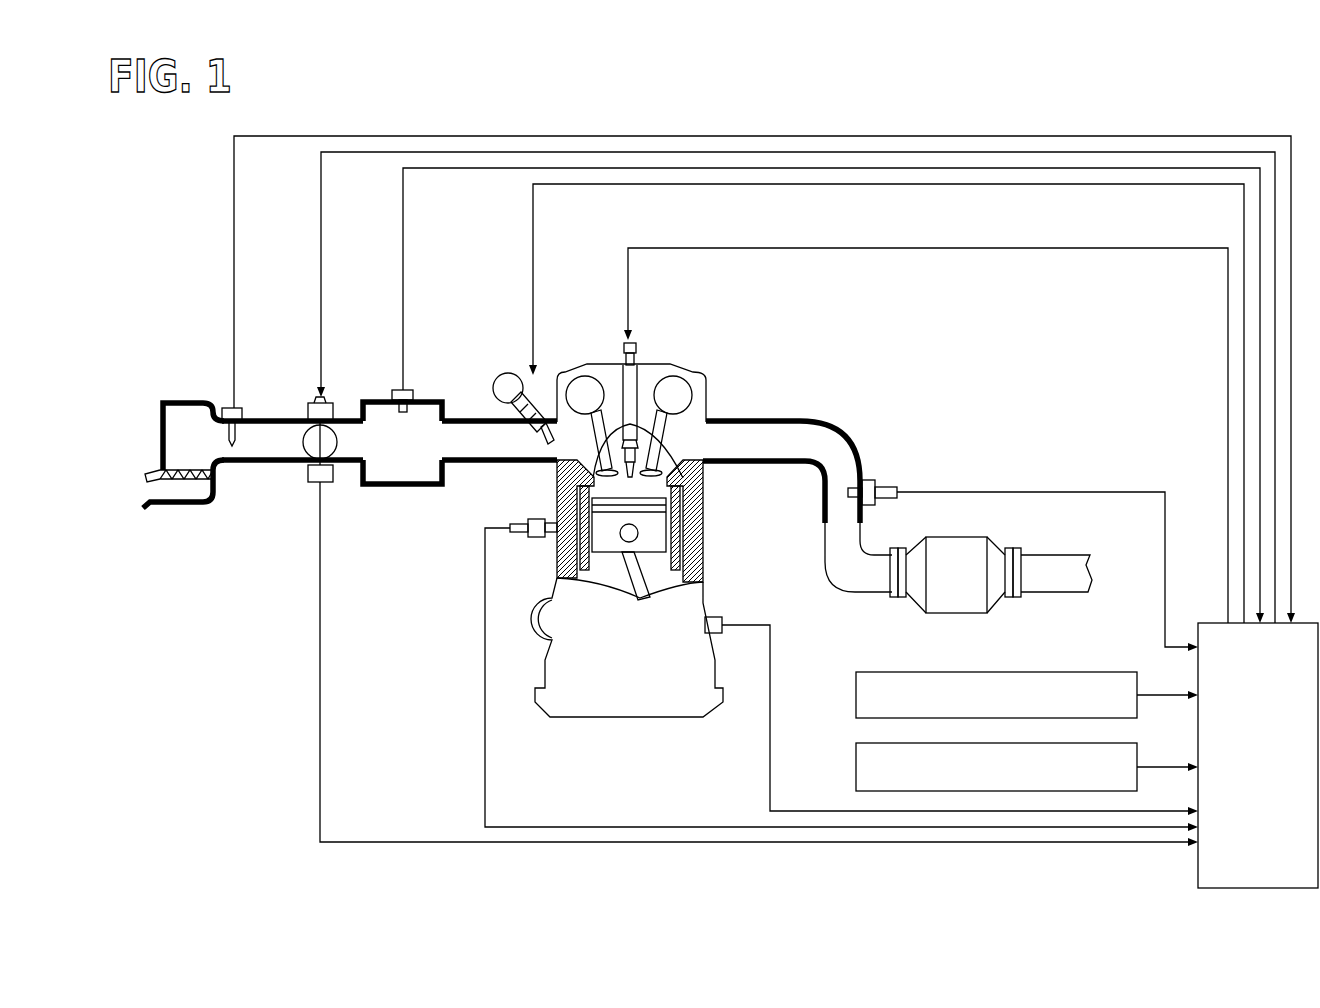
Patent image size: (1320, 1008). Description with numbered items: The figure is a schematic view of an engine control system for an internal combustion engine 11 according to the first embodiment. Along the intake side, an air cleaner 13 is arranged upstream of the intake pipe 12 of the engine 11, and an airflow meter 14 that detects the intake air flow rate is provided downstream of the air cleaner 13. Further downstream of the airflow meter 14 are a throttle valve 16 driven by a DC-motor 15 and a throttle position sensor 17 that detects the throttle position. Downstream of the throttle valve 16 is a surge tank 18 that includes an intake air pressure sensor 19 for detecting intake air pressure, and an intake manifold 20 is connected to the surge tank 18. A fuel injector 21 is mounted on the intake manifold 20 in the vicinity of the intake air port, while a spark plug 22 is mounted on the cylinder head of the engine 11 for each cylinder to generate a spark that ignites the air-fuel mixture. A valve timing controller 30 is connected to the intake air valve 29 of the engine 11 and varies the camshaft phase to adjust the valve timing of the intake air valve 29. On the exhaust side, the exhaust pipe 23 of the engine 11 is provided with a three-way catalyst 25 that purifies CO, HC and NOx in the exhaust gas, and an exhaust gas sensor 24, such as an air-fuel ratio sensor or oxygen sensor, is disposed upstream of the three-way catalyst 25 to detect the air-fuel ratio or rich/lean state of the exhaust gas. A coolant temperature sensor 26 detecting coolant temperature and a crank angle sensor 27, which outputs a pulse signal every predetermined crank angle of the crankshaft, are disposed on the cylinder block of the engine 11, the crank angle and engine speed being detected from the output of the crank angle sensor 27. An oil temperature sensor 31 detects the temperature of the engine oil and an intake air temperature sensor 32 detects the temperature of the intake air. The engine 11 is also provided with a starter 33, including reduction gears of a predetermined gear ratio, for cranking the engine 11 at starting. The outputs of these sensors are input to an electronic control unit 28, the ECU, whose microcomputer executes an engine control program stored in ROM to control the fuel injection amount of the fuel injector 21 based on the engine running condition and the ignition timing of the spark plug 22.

The internal combustion engine 11 is at (577, 498).
The intake pipe 12 is at (268, 415).
The air cleaner 13 is at (183, 480).
The airflow meter 14 is at (230, 402).
The DC-motor 15 is at (300, 396).
The throttle valve 16 is at (308, 445).
The throttle position sensor 17 is at (313, 486).
The surge tank 18 is at (393, 488).
The intake air pressure sensor 19 is at (404, 389).
The intake manifold 20 is at (472, 417).
The fuel injector 21 is at (499, 397).
The spark plug 22 is at (638, 364).
The exhaust pipe 23 is at (812, 420).
The exhaust gas sensor 24 is at (870, 480).
The three-way catalyst 25 is at (965, 538).
The coolant temperature sensor 26 is at (535, 550).
The crank angle sensor 27 is at (722, 615).
The electronic control unit 28 is at (1198, 867).
The intake air valve 29 is at (557, 490).
The valve timing controller 30 is at (578, 384).
The oil temperature sensor 31 is at (856, 696).
The intake air temperature sensor 32 is at (856, 765).
The starter 33 is at (524, 637).